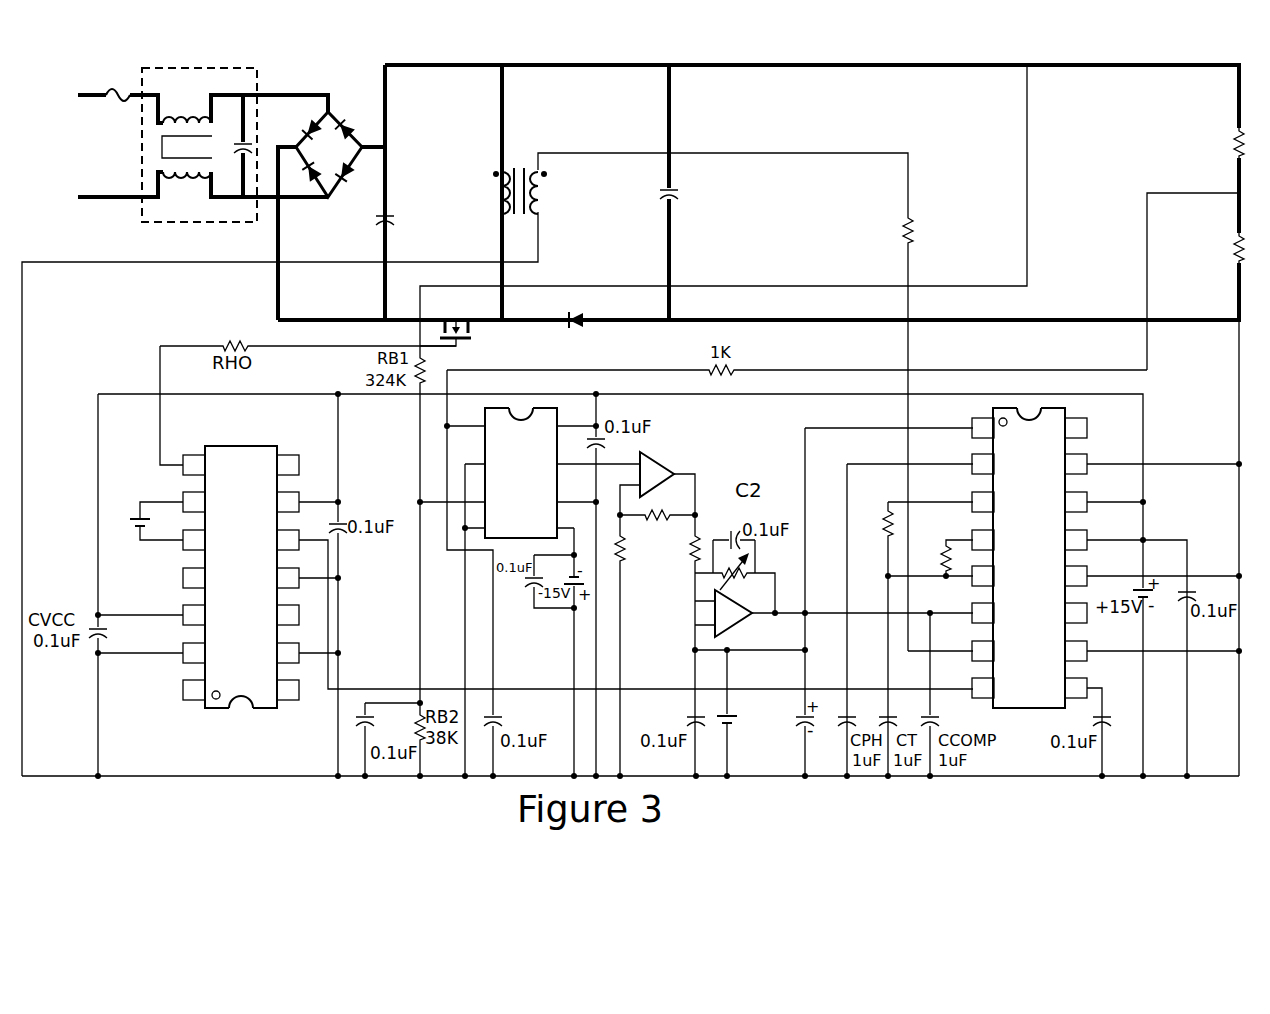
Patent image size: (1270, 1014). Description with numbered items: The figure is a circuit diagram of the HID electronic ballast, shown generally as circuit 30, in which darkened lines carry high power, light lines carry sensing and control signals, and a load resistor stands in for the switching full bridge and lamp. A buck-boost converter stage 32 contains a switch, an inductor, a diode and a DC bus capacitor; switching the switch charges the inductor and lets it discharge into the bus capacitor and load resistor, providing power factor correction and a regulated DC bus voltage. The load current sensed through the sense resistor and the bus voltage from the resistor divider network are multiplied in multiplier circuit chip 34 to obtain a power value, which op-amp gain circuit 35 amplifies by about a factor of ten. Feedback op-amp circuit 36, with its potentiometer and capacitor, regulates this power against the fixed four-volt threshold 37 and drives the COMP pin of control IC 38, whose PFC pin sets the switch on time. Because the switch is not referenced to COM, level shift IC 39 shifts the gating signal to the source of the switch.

The circuit 30 is at (660, 30).
The buck-boost converter stage 32 is at (944, 46).
The multiplier circuit chip 34 is at (509, 451).
The op-amp gain circuit 35 is at (700, 448).
The feedback op-amp circuit 36 is at (698, 614).
The 4V threshold 37 is at (735, 736).
The control IC 38 is at (1015, 682).
The level shift IC 39 is at (229, 490).